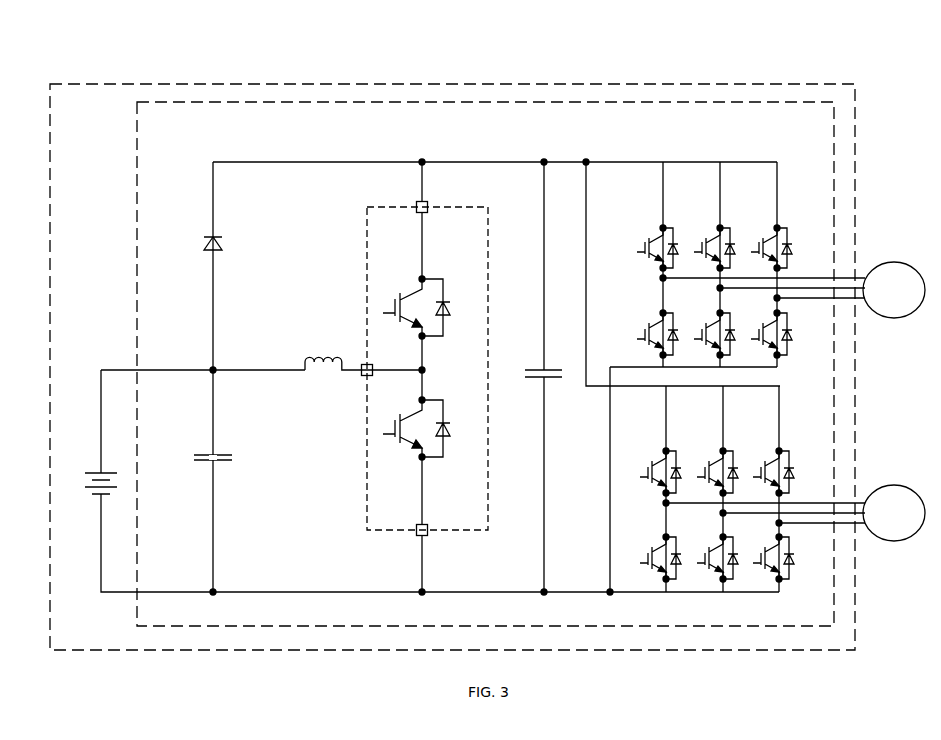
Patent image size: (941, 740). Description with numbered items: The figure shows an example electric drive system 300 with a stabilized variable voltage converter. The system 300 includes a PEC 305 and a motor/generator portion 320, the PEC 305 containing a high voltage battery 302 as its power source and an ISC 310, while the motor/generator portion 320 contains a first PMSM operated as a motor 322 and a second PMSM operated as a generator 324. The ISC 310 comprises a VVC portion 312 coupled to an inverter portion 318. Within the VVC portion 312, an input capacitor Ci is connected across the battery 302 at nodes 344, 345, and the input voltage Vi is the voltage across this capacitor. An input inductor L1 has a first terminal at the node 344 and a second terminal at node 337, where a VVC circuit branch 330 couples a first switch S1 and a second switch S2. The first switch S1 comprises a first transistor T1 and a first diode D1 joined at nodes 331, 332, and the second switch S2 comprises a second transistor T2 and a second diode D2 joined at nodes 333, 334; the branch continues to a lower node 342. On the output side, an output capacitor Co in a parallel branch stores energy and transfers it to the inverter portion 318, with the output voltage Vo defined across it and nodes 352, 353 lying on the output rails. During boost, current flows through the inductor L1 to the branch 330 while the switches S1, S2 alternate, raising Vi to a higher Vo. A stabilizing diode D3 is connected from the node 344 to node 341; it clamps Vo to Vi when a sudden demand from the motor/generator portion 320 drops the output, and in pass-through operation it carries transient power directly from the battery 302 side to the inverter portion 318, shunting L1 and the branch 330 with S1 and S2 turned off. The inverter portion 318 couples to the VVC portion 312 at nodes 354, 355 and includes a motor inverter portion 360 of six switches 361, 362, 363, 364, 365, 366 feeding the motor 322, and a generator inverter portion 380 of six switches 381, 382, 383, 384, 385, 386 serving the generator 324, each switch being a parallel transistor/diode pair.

The system 300 is at (488, 55).
The high voltage battery 302 is at (95, 472).
The PEC 305 is at (112, 118).
The ISC 310 is at (172, 126).
The VVC portion 312 is at (208, 160).
The inverter portion 318 is at (598, 135).
The motor/generator portion 320 is at (921, 245).
The motor 322 is at (908, 298).
The generator 324 is at (908, 521).
The VVC circuit branch 330 is at (358, 230).
The node 331 is at (424, 279).
The node 332 is at (421, 338).
The node 333 is at (424, 400).
The node 334 is at (424, 460).
The node 337 is at (424, 370).
The node 341 is at (424, 166).
The lower module terminal 342 is at (424, 591).
The node 344 is at (215, 369).
The node 345 is at (214, 591).
The output positive node 352 is at (543, 161).
The output negative node 353 is at (543, 591).
The node 354 is at (585, 164).
The node 355 is at (609, 591).
The motor inverter portion 360 is at (648, 200).
The switch 361 is at (650, 240).
The switch 362 is at (650, 320).
The switch 363 is at (712, 232).
The switch 364 is at (712, 322).
The switch 365 is at (783, 222).
The switch 366 is at (790, 344).
The generator inverter portion 380 is at (598, 430).
The switch 381 is at (652, 447).
The switch 382 is at (652, 537).
The switch 383 is at (708, 445).
The switch 384 is at (712, 535).
The switch 385 is at (760, 445).
The switch 386 is at (798, 560).
The first diode D1 is at (453, 302).
The second diode D2 is at (444, 447).
The diode D3 is at (218, 236).
The first transistor T1 is at (405, 292).
The second transistor T2 is at (412, 412).
The first switch S1 is at (406, 266).
The second switch S2 is at (398, 460).
The input inductor L1 is at (314, 360).
The input capacitor Ci is at (220, 454).
The output capacitor Co is at (540, 366).
The input voltage Vi is at (169, 455).
The output voltage Vo is at (513, 375).